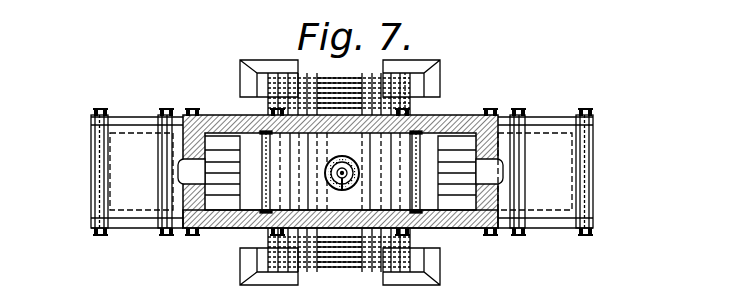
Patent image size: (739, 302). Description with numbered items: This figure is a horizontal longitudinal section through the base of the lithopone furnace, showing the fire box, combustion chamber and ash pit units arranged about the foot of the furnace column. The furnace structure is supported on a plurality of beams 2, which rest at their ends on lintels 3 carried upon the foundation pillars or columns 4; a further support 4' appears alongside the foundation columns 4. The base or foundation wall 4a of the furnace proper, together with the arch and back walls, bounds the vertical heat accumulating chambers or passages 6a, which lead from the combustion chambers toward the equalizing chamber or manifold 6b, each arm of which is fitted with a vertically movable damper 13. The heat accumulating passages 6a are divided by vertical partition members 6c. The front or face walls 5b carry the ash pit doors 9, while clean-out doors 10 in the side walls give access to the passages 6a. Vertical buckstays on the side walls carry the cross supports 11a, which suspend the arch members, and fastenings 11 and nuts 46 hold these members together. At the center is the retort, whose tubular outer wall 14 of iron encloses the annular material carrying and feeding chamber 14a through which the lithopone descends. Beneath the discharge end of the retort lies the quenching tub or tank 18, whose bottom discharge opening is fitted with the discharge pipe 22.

The beams 2 is at (433, 73).
The lintels 3 is at (338, 73).
The foundation pillars or columns 4 is at (336, 163).
The yoke end bar 4' is at (449, 84).
The base or foundation wall 4a is at (336, 147).
The front or face walls 5b is at (178, 168).
The vertical heat accumulating chambers or passages 6a is at (207, 190).
The equalizing chamber or manifold 6b is at (393, 161).
The vertical partition members 6c is at (205, 148).
The ash pit doors 9 is at (343, 189).
The clean-out doors 10 is at (180, 172).
The bolt 11 is at (273, 110).
The cross supports 11a is at (112, 150).
The vertically movable damper 13 is at (230, 118).
The outer wall 14 is at (325, 177).
The annular material carrying and feeding chamber 14a is at (356, 164).
The quenching tub or tank 18 is at (240, 229).
The discharge pipe 22 is at (117, 193).
The nut 46 is at (95, 237).